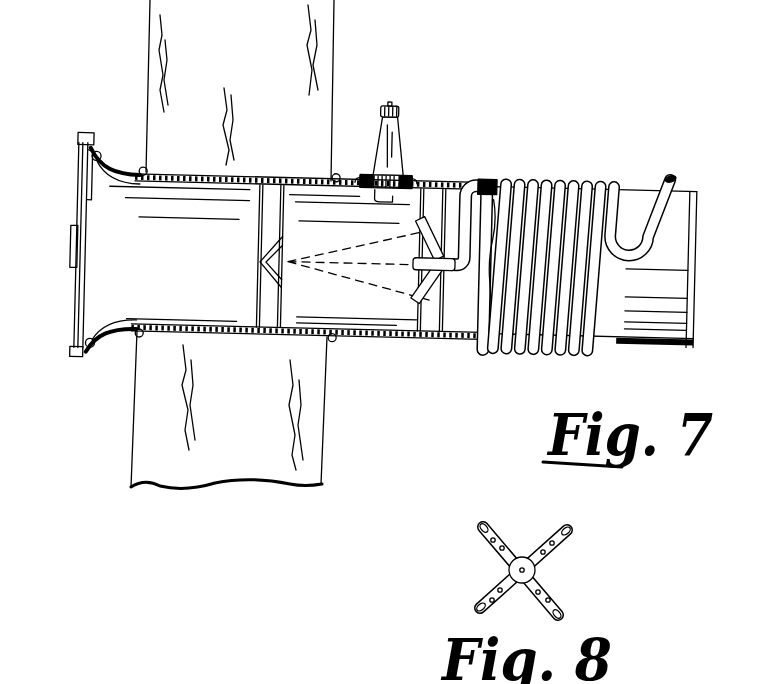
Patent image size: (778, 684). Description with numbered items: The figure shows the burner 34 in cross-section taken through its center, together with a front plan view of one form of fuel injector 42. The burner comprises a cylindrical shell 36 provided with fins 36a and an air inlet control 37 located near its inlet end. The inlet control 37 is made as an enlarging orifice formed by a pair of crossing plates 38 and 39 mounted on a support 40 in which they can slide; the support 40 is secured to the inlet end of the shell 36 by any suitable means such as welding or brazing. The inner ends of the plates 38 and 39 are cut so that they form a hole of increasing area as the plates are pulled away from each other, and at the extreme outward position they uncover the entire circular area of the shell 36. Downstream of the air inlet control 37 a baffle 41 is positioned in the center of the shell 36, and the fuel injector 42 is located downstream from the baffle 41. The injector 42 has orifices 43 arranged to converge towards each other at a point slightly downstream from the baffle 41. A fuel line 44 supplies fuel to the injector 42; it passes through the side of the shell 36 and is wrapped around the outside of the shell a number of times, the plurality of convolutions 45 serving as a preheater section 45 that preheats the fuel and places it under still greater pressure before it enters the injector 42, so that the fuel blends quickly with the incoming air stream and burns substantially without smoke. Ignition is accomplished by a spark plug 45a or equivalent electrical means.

In FIG. 7, the burner 34 is at (442, 178).
In FIG. 7, the cylindrical shell 36 is at (403, 338).
In FIG. 7, the fins 36a is at (265, 38).
In FIG. 7, the air inlet control 37 is at (76, 364).
In FIG. 7, the crossing plate 38 is at (86, 198).
In FIG. 7, the crossing plate 39 is at (76, 282).
In FIG. 7, the support 40 is at (86, 133).
In FIG. 7, the baffle 41 is at (284, 273).
In FIG. 7, the fuel injector 42 is at (446, 290).
In FIG. 8, the fuel injector 42 is at (558, 567).
In FIG. 8, the orifices 43 is at (523, 567).
In FIG. 7, the fuel line 44 is at (478, 183).
In FIG. 7, the convolutions 45 is at (596, 181).
In FIG. 7, the spark plug 45a is at (400, 138).